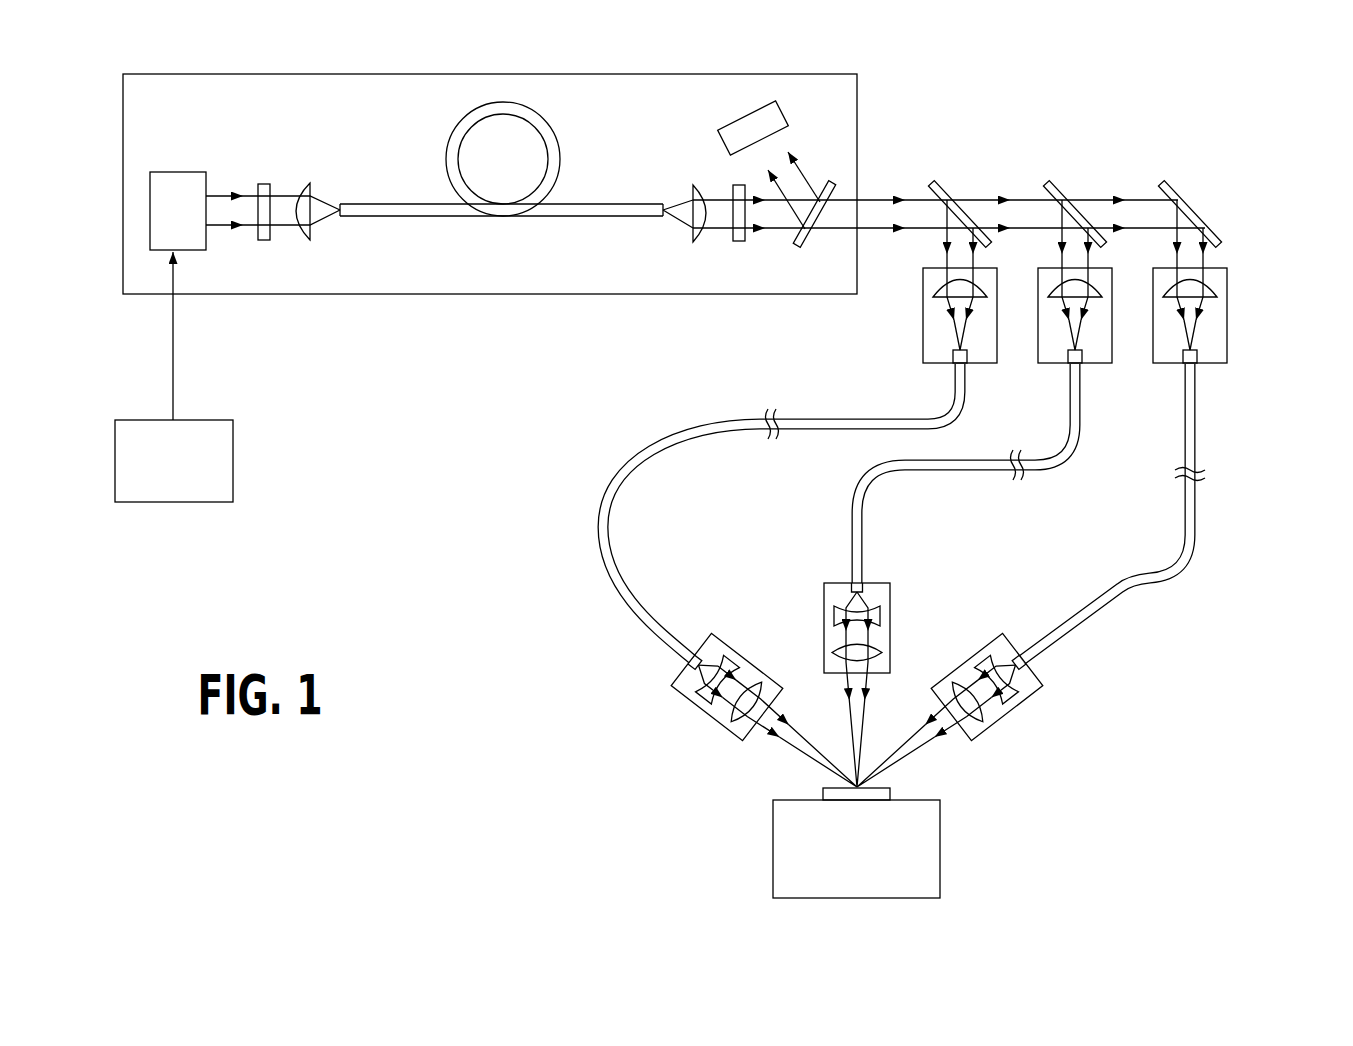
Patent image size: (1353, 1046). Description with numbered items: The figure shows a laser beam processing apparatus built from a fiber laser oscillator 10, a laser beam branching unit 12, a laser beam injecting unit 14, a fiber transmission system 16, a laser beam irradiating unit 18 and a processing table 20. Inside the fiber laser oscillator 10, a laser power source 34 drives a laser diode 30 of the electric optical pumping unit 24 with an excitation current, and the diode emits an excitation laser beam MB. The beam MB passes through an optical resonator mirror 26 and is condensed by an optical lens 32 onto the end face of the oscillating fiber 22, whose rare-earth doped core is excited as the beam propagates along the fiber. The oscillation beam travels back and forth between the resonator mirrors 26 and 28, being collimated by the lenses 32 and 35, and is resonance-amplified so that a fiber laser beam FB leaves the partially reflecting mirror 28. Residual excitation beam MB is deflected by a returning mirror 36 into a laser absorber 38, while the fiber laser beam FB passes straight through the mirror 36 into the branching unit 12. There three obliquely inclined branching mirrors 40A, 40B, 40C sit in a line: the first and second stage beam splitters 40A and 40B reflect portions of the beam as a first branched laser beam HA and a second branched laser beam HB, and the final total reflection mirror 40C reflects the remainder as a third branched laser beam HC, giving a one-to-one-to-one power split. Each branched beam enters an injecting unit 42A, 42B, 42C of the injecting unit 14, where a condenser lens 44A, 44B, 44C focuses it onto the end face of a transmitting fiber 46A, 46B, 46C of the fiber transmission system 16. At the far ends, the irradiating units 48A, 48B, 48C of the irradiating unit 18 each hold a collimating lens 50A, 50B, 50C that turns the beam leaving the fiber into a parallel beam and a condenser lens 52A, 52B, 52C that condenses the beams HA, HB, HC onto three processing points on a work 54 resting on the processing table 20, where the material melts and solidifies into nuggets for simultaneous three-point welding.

The fiber laser oscillator 10 is at (407, 318).
The laser beam branching unit 12 is at (1073, 143).
The laser beam injecting unit 14 is at (1095, 291).
The fiber transmission system 16 is at (877, 516).
The laser beam irradiating unit 18 is at (836, 683).
The processing table 20 is at (940, 868).
The oscillating fiber 22 is at (553, 133).
The electric optical pumping unit 24 is at (262, 296).
The optical resonator mirror 26 is at (263, 183).
The optical resonator mirror 28 is at (735, 240).
The laser diode 30 is at (178, 170).
The optical lens 32 is at (304, 183).
The laser power source 34 is at (233, 462).
The optical lens 35 is at (690, 190).
The returning mirror 36 is at (812, 248).
The laser absorber 38 is at (790, 110).
The branching mirror 40A is at (940, 180).
The branching mirror 40B is at (1055, 180).
The branching mirror 40C is at (1173, 180).
The first injecting unit 42A is at (920, 315).
The second injecting unit 42B is at (1094, 335).
The third injecting unit 42C is at (1236, 315).
The condenser lens 44A is at (933, 293).
The condenser lens 44B is at (1092, 300).
The condenser lens 44C is at (1228, 293).
The first transmitting fiber 46A is at (604, 490).
The second transmitting fiber 46B is at (855, 515).
The third transmitting fiber 46C is at (1116, 575).
The irradiating unit 48A is at (738, 696).
The irradiating unit 48B is at (868, 672).
The irradiating unit 48C is at (965, 683).
The collimating lens 50A is at (716, 650).
The collimating lens 50B is at (883, 610).
The collimating lens 50C is at (1032, 690).
The condenser lens 52A is at (761, 672).
The condenser lens 52B is at (894, 652).
The condenser lens 52C is at (1002, 727).
The work 54 is at (820, 793).
The excitation laser beam MB is at (228, 228).
The fiber laser beam FB is at (778, 238).
The first branched laser beam HA is at (943, 240).
The second branched laser beam HB is at (1058, 240).
The third branched laser beam HC is at (1173, 240).